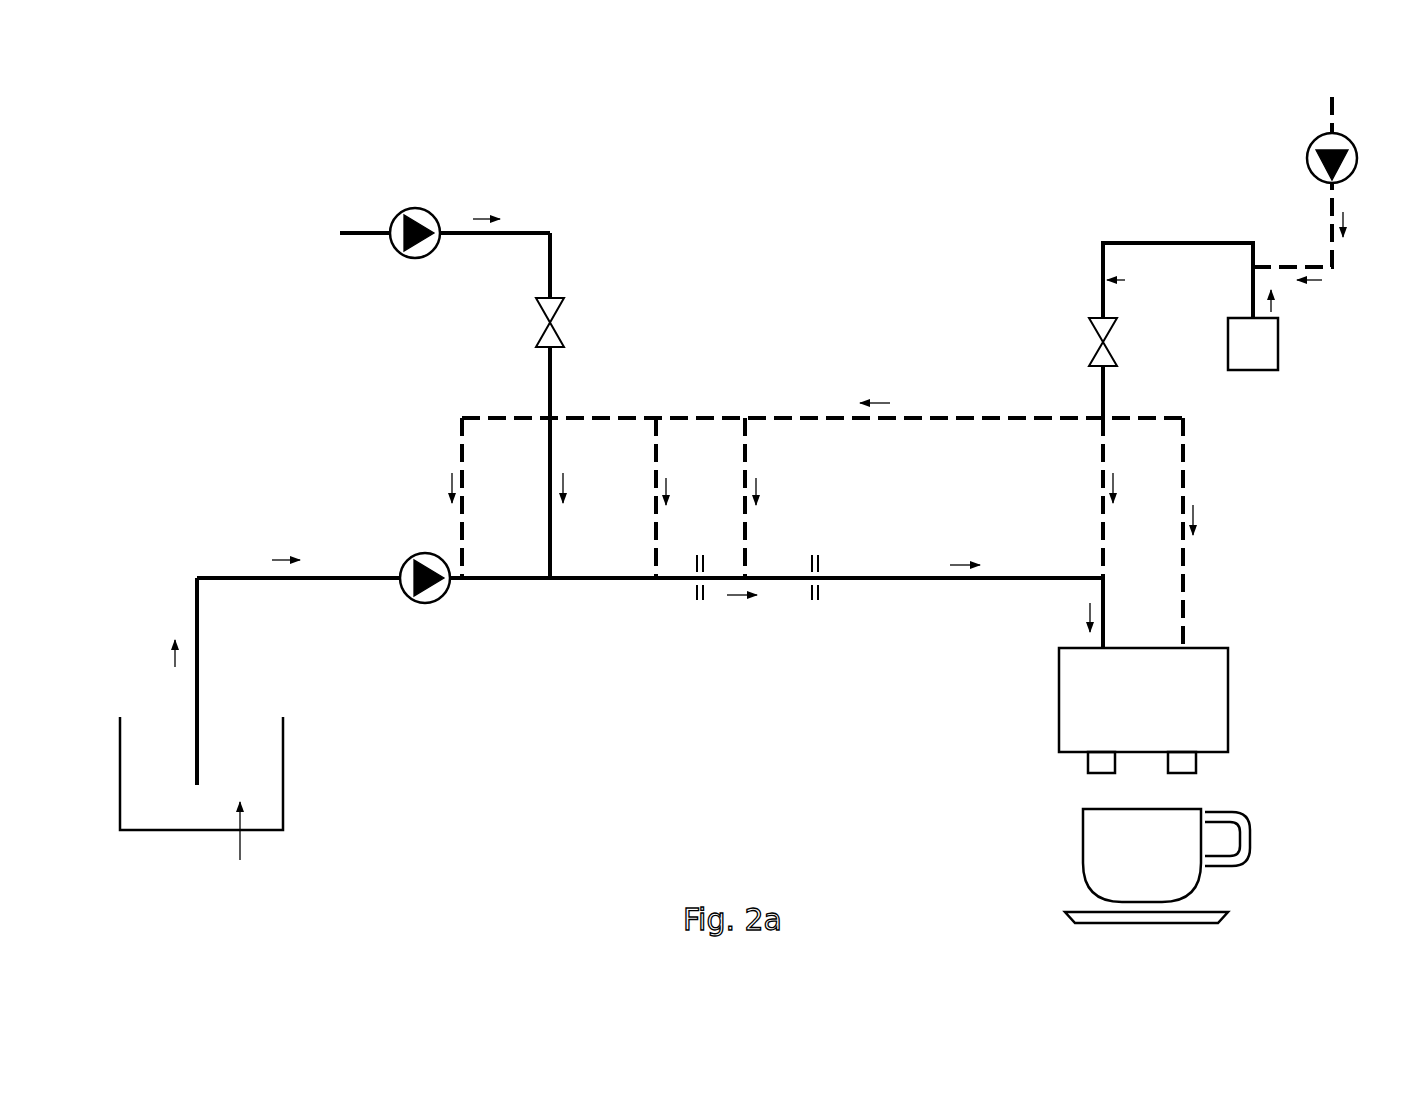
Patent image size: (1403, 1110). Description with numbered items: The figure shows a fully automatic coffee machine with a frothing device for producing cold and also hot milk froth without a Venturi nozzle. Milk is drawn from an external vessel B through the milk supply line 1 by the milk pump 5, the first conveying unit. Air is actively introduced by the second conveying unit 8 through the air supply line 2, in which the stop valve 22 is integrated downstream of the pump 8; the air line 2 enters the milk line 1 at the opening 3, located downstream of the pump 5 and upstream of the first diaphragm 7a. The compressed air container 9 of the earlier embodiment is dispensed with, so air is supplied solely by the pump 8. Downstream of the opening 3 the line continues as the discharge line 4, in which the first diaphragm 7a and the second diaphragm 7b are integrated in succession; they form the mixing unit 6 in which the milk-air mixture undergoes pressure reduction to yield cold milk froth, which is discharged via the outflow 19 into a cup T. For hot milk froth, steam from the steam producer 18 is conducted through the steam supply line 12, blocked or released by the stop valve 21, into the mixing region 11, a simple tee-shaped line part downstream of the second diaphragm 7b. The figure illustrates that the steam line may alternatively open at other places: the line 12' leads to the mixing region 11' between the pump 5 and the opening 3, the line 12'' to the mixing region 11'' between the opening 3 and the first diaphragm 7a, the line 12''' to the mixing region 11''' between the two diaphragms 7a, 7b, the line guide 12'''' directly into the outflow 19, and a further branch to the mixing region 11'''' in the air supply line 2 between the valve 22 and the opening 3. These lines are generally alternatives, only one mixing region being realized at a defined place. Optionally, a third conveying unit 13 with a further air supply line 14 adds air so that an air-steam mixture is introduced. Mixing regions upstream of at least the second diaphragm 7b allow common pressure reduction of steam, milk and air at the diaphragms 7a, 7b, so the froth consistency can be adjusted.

The milk supply line 1 is at (330, 572).
The air supply line 2 is at (533, 230).
The opening 3 is at (550, 583).
The discharge line 4 is at (760, 572).
The milk pump 5 is at (406, 596).
The mixing unit 6 is at (788, 742).
The first diaphragm 7a is at (701, 602).
The second diaphragm 7b is at (813, 602).
The second conveying unit 8 is at (430, 210).
The compressed air container 9 is at (329, 331).
The mixing region 11 is at (1073, 564).
The mixing region 11' is at (465, 621).
The mixing region 11'' is at (658, 626).
The mixing region 11''' is at (722, 545).
The mixing region 11'''' is at (582, 393).
The steam supply line 12 is at (1074, 498).
The steam supply line 12' is at (784, 476).
The steam supply line 12'' is at (694, 498).
The steam supply line 12''' is at (786, 498).
The steam supply line 12'''' is at (1229, 533).
The third conveying unit 13 is at (1306, 148).
The further air supply line 14 is at (1337, 250).
The steam producer 18 is at (1253, 344).
The outflow 19 is at (1231, 713).
The stop valve 21 is at (1088, 328).
The stop valve 22 is at (565, 325).
The external vessel B is at (117, 795).
The cup T is at (1108, 843).